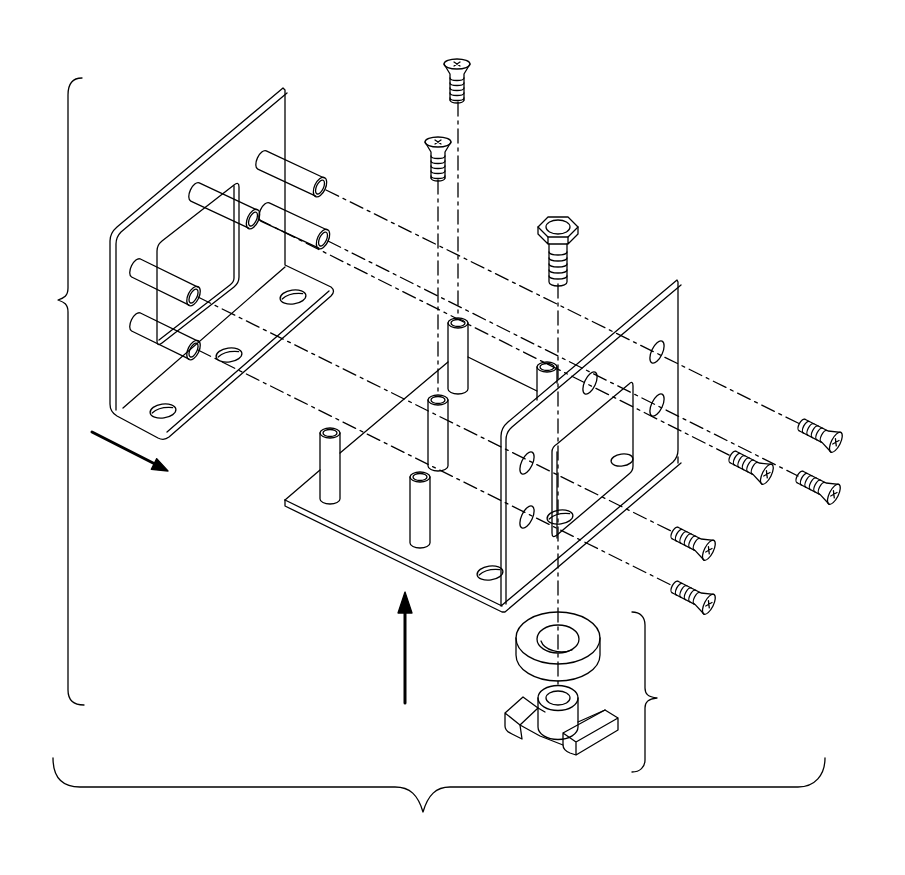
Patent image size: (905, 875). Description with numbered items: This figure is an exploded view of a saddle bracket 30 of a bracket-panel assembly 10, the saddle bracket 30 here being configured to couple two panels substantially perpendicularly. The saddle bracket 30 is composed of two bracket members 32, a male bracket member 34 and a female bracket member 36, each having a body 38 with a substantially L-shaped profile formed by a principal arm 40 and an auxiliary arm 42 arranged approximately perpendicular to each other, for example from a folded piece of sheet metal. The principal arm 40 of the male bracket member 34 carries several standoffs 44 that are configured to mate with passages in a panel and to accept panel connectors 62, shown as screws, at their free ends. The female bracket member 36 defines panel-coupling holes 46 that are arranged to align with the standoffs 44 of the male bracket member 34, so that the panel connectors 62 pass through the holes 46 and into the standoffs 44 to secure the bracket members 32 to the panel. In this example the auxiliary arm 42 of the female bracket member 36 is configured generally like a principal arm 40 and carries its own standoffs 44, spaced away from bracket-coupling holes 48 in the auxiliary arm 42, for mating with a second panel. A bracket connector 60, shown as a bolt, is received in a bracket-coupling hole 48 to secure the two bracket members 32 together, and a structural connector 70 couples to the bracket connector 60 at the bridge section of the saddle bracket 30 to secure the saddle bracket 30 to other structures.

The assembly 10 is at (128, 58).
The saddle bracket 30 is at (57, 301).
The bracket member 32 is at (285, 88).
The male bracket member 34 is at (286, 123).
The female bracket member 36 is at (638, 304).
The body 38 is at (108, 348).
The principal arm 40 is at (106, 284).
The auxiliary arm 42 is at (184, 440).
The standoff 44 is at (302, 163).
The panel-coupling hole 46 is at (667, 352).
The bracket-coupling hole 48 is at (150, 412).
The bracket connector 60 is at (580, 234).
The panel connector 62 is at (468, 80).
The structural connector 70 is at (657, 698).